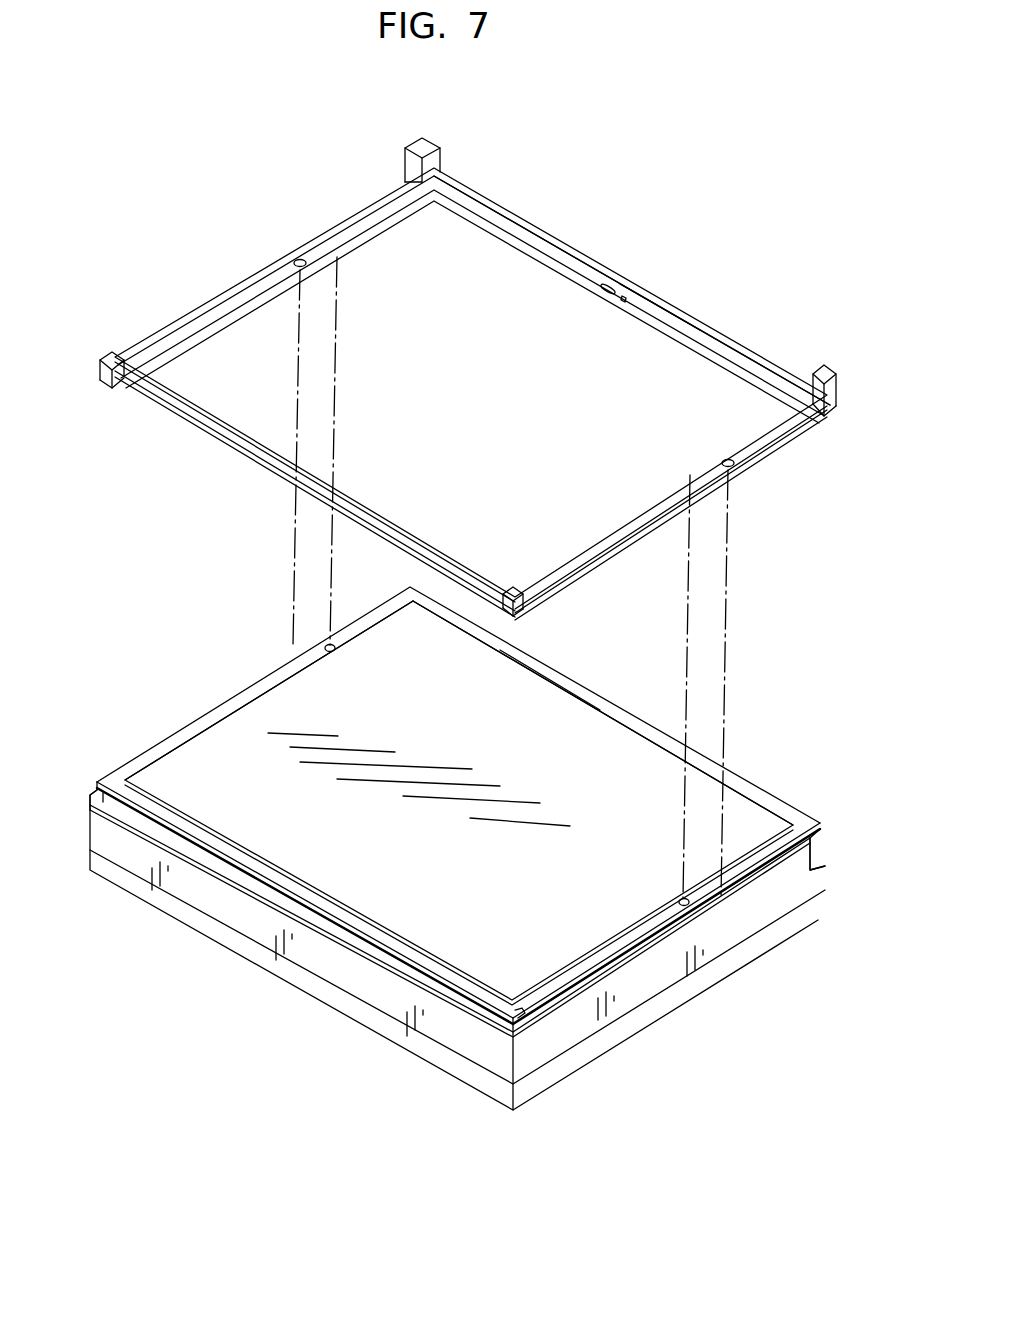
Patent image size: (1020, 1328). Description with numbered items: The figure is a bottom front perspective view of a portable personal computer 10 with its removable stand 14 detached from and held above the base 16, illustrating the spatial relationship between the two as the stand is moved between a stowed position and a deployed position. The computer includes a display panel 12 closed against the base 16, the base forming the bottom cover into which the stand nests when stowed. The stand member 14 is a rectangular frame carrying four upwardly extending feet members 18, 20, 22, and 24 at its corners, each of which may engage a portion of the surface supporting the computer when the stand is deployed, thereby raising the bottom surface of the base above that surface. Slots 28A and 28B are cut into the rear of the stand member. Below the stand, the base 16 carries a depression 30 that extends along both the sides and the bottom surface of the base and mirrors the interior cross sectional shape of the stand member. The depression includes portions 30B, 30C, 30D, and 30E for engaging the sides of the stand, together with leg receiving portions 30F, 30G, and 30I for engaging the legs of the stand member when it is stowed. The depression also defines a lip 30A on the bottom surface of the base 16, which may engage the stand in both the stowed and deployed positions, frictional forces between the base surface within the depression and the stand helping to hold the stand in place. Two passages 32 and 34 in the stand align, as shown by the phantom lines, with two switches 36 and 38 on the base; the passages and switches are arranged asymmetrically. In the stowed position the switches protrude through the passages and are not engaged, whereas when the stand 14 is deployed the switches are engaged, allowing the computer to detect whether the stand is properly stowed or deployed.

The portable personal computer 10 is at (722, 1071).
The display panel 12 is at (240, 945).
The removable stand 14 is at (630, 282).
The base 16 is at (365, 985).
The foot member 18 is at (106, 378).
The foot member 20 is at (528, 606).
The foot member 22 is at (404, 158).
The foot member 24 is at (834, 404).
The slot 28A is at (535, 252).
The slot 28B is at (703, 350).
The depression 30 is at (806, 813).
The lip 30A is at (598, 708).
The side engaging portion 30B is at (610, 950).
The side engaging portion 30C is at (340, 912).
The side engaging portion 30D is at (232, 700).
The side engaging portion 30E is at (565, 680).
The leg receiving portion 30F is at (92, 800).
The leg receiving portion 30G is at (520, 1020).
The leg receiving portion 30I is at (821, 840).
The passage 32 is at (300, 258).
The passage 34 is at (722, 462).
The switch 36 is at (335, 648).
The switch 38 is at (690, 905).